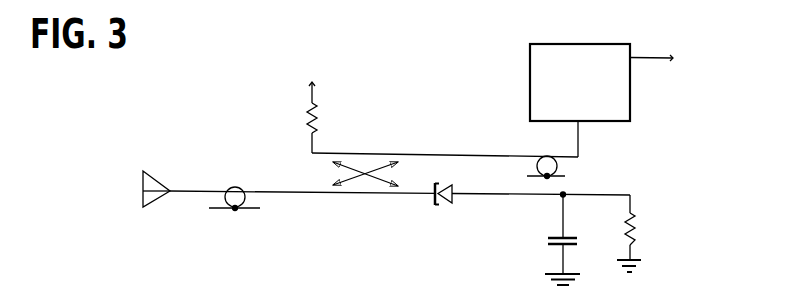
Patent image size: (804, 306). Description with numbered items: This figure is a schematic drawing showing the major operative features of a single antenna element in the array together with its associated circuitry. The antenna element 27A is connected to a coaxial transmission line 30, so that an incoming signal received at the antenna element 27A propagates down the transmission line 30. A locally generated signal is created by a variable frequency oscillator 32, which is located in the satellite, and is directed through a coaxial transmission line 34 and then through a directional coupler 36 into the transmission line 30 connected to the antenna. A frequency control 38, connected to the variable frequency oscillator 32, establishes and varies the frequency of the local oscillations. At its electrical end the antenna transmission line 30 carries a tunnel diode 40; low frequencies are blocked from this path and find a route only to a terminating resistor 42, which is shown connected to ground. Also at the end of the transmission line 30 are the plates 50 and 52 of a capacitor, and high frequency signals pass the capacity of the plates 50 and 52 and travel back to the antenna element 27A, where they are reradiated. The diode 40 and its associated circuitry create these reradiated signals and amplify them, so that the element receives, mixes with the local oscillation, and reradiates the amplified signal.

The antenna element 27A is at (163, 184).
The coaxial transmission line 30 is at (268, 188).
The variable frequency oscillator 32 is at (530, 64).
The coaxial transmission line 34 is at (484, 153).
The directional coupler 36 is at (383, 165).
The frequency control 38 is at (648, 58).
The tunnel diode 40 is at (450, 202).
The terminating resistor 42 is at (634, 228).
The plate 50 is at (570, 238).
The plate 52 is at (557, 245).